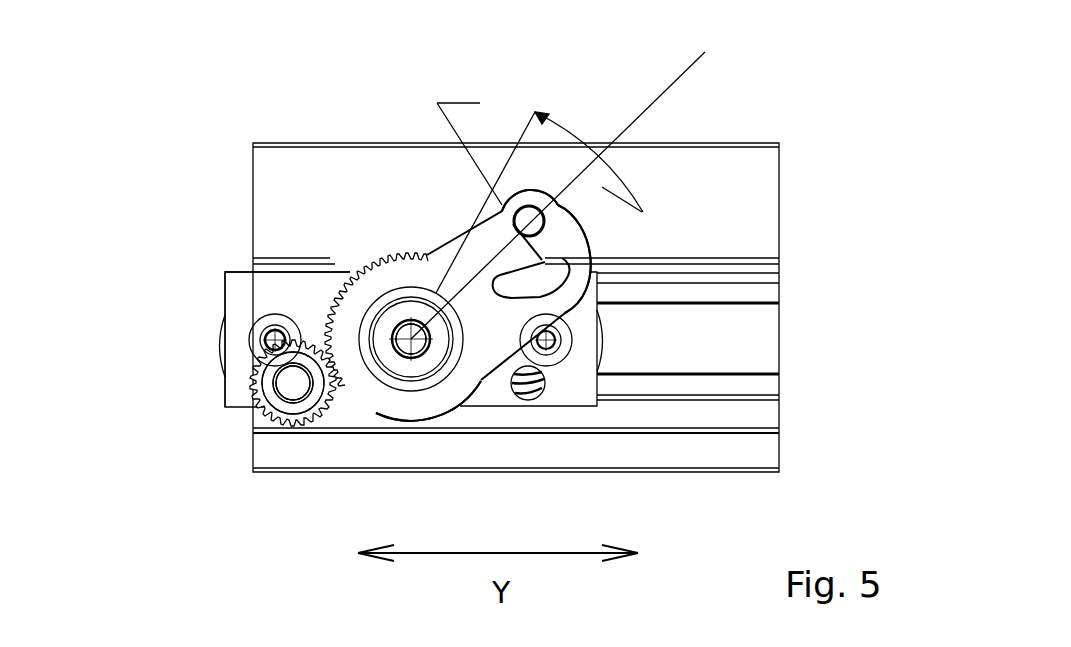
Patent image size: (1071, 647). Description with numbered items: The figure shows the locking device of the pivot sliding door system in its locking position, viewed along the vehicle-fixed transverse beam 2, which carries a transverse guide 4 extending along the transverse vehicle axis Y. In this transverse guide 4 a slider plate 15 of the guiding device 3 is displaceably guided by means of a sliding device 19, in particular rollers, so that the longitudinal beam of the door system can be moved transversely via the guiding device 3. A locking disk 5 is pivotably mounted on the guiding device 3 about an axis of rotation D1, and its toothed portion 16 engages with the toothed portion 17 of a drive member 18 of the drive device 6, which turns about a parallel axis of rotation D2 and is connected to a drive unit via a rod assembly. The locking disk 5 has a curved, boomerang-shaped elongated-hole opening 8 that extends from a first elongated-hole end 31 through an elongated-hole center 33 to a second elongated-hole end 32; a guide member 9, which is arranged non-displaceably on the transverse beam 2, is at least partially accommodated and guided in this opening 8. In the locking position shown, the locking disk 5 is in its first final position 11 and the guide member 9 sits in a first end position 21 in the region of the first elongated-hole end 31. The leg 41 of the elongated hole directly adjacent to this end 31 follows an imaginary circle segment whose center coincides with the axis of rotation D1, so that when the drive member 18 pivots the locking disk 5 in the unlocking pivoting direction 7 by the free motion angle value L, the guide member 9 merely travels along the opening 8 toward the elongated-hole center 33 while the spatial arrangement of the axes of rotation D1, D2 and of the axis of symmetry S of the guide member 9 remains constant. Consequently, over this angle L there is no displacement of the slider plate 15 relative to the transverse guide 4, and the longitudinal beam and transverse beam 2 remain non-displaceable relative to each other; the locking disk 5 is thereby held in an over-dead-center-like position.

The transverse beam 2 is at (750, 198).
The guiding device 3 is at (210, 287).
The transverse guide 4 is at (755, 342).
The locking disk 5 is at (413, 266).
The drive device 6 is at (247, 393).
The unlocking pivoting direction 7 is at (568, 130).
The elongated-hole opening 8 is at (520, 270).
The guide member 9 is at (518, 200).
The first final position 11 is at (440, 193).
The slider plate 15 is at (277, 293).
The toothed portion 16 is at (253, 315).
The toothed portion 17 is at (250, 377).
The drive member 18 is at (293, 383).
The sliding device 19 is at (605, 340).
The first end position 21 is at (498, 197).
The first elongated-hole end 31 is at (505, 207).
The second elongated-hole end 32 is at (483, 365).
The elongated-hole center 33 is at (598, 280).
The leg of the elongated hole 41 is at (411, 339).
The axis of symmetry S is at (573, 176).
The free motion angle value L is at (602, 187).
The axis of rotation D1 is at (411, 339).
The axis of rotation D2 is at (293, 383).